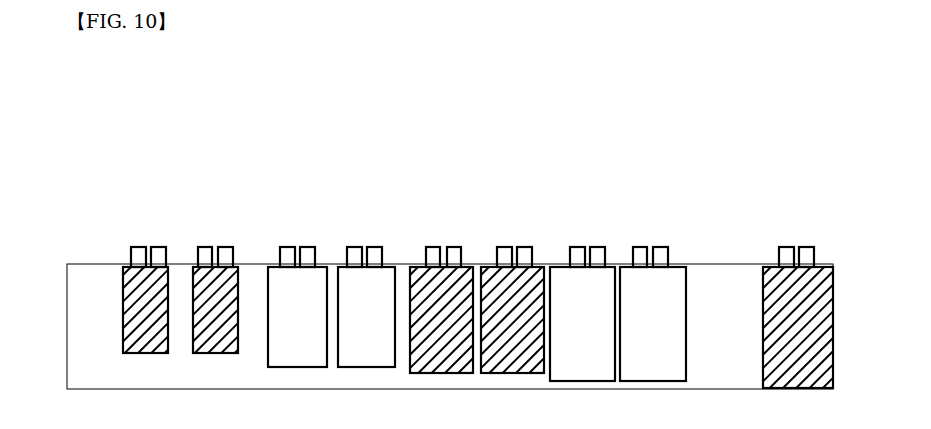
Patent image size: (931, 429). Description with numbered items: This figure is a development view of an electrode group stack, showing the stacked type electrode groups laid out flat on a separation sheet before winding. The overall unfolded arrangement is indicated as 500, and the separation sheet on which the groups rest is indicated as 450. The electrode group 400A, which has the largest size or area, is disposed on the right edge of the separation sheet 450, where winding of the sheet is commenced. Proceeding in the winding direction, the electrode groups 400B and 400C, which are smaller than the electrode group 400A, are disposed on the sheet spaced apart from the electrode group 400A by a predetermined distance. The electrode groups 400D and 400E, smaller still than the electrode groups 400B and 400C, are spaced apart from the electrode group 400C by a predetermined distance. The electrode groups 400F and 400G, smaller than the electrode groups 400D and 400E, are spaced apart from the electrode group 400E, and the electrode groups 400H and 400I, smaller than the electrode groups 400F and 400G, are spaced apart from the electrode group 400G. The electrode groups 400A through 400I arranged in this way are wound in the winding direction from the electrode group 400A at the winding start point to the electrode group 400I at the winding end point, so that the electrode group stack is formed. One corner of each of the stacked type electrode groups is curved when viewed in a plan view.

The battery module 500 is at (126, 86).
The module housing / filler 450 is at (698, 290).
The electrode group 400A is at (820, 265).
The electrode group 400B is at (677, 265).
The electrode group 400C is at (557, 265).
The electrode group 400D is at (485, 265).
The electrode group 400E is at (418, 265).
The electrode group 400F is at (385, 265).
The electrode group 400G is at (275, 265).
The electrode group 400H is at (197, 265).
The electrode group 400I is at (127, 265).